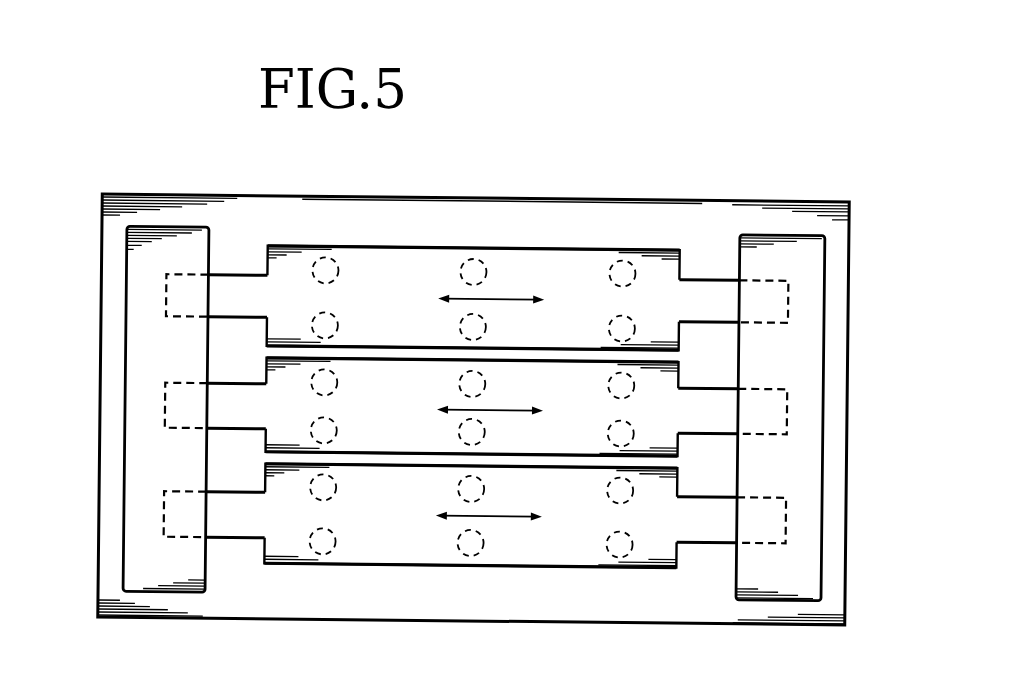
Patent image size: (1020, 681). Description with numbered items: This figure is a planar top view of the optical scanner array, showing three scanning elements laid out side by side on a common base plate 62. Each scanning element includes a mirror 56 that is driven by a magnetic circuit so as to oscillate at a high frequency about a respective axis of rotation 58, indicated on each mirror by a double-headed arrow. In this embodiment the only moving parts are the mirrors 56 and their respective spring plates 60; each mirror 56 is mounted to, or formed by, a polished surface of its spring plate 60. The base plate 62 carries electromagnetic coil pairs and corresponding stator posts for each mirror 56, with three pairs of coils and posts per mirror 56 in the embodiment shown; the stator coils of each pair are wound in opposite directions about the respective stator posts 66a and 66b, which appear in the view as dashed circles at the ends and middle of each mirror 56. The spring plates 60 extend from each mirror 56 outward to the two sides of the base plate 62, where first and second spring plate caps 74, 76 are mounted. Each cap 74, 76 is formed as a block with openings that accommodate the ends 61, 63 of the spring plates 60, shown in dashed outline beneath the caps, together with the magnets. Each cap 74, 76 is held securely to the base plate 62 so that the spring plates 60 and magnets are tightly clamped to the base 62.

The mirror 56 is at (426, 248).
The axis of rotation 58 is at (525, 486).
The spring plate 60 is at (710, 276).
The end of spring plate 61 is at (158, 529).
The base plate 62 is at (360, 622).
The end of spring plate 63 is at (863, 501).
The stator post 66a is at (649, 298).
The stator post 66b is at (623, 261).
The spring plate cap 74 is at (151, 243).
The spring plate cap 76 is at (778, 240).